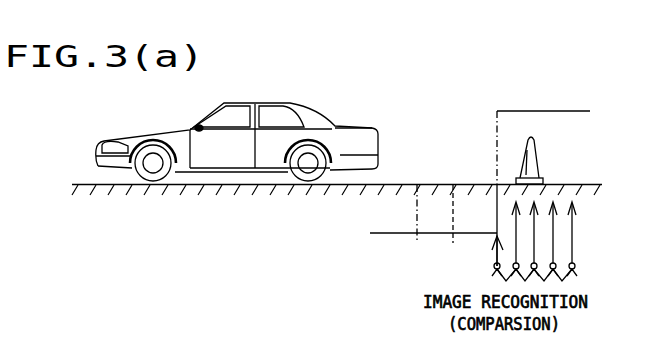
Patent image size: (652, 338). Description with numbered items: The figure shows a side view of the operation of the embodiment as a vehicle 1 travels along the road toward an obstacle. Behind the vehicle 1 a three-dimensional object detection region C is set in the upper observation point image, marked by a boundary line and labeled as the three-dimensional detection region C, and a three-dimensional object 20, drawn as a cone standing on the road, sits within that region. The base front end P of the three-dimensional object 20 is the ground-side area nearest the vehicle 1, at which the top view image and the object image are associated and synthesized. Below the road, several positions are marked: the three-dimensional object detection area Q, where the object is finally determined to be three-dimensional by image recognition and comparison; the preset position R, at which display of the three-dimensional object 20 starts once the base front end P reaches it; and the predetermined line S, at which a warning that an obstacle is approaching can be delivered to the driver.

The vehicle 1 is at (334, 112).
The three-dimensional object 20 is at (535, 145).
The three-dimensional object detection region C is at (551, 125).
The base front end P is at (513, 179).
The three-dimensional object detection area Q is at (495, 244).
The preset position R is at (453, 243).
The predetermined line S is at (417, 243).